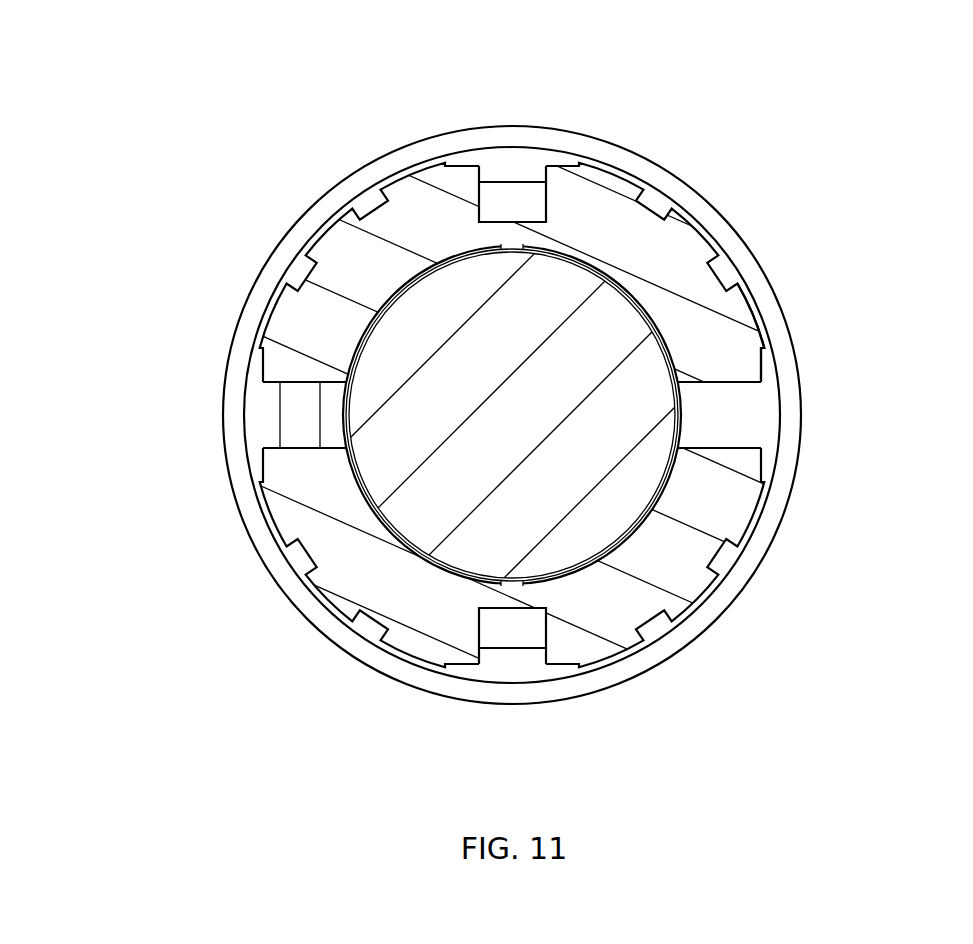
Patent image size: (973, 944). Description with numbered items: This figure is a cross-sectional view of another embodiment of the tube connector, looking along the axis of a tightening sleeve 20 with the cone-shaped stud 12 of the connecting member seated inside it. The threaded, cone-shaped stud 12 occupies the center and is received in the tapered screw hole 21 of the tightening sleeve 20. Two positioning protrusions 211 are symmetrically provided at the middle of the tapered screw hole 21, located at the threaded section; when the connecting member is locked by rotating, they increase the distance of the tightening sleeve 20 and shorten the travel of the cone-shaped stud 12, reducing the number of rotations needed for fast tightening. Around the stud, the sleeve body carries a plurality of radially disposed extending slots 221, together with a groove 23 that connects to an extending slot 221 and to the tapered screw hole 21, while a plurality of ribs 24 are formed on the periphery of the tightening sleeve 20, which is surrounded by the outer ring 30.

The cone-shaped stud 12 is at (372, 368).
The tightening sleeve 20 is at (740, 265).
The tapered screw hole 21 is at (343, 411).
The positioning protrusion 211 is at (492, 243).
The extending slot 221 is at (523, 215).
The groove 23 is at (722, 418).
The rib 24 is at (748, 338).
The outer sleeve ring 30 is at (689, 187).